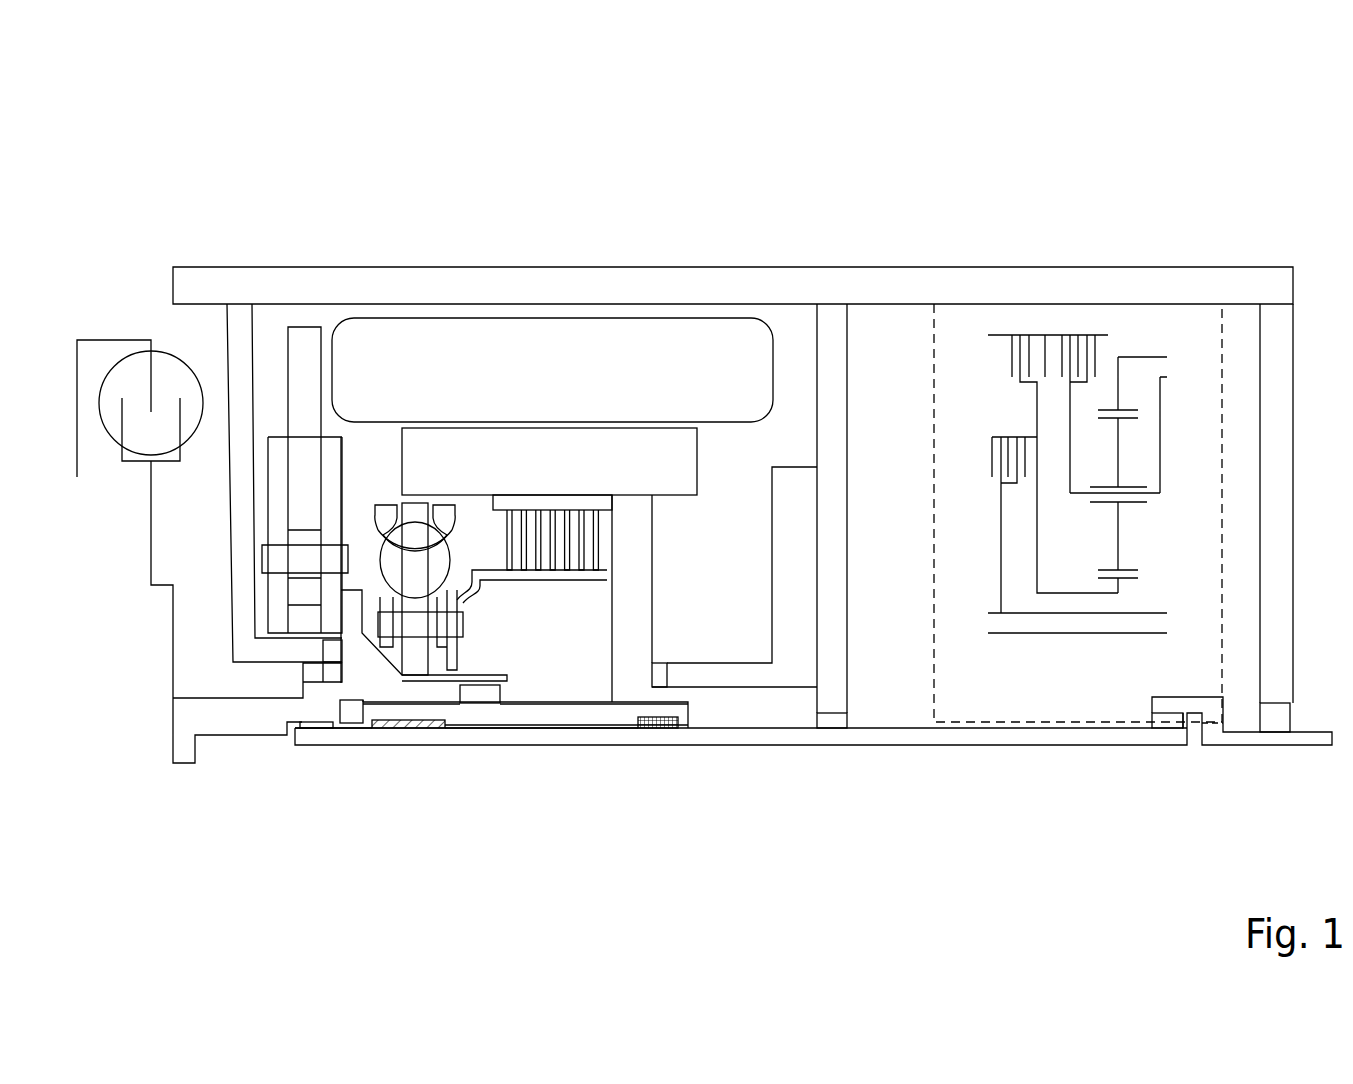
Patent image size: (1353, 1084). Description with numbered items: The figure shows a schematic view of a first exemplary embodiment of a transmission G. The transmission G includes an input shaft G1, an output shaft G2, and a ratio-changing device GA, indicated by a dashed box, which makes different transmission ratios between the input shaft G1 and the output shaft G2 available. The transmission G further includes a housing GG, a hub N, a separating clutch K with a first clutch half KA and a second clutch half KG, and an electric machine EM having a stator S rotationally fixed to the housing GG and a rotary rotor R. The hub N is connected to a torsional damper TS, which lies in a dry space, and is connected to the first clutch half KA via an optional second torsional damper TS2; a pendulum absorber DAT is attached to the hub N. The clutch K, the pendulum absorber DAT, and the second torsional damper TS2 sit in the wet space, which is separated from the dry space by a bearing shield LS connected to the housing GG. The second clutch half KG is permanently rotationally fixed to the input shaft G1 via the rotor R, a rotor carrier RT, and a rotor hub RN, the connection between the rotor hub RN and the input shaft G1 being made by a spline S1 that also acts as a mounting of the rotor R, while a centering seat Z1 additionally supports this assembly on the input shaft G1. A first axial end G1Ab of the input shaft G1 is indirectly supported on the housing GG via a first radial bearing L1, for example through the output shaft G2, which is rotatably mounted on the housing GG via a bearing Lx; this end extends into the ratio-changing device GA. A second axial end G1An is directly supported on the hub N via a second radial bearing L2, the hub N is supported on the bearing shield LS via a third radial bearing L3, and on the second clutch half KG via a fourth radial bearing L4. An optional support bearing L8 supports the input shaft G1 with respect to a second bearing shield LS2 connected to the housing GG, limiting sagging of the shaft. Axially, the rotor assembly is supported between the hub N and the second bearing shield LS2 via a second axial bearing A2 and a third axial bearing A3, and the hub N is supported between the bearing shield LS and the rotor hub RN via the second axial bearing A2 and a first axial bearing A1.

The electric machine EM is at (417, 120).
The housing GG is at (205, 285).
The bearing shield LS is at (240, 333).
The pendulum absorber DAT is at (303, 316).
The torsional damper TS is at (122, 509).
The second torsional damper TS2 is at (381, 486).
The stator S is at (433, 353).
The rotor R is at (502, 463).
The second clutch half KG is at (558, 500).
The separating clutch K is at (595, 471).
The rotor carrier RT is at (635, 525).
The first clutch half KA is at (592, 575).
The first axial bearing A1 is at (315, 653).
The second axial bearing A2 is at (356, 731).
The third axial bearing A3 is at (664, 658).
The second bearing shield LS2 is at (833, 538).
The first radial bearing L1 is at (1160, 733).
The second radial bearing L2 is at (320, 731).
The third radial bearing L3 is at (298, 673).
The fourth radial bearing L4 is at (590, 727).
The support bearing L8 is at (847, 717).
The bearing Lx is at (1279, 734).
The hub N is at (265, 715).
The second axial end G1An is at (432, 730).
The first axial end G1Ab is at (1158, 750).
The input shaft G1 is at (913, 733).
The output shaft G2 is at (1235, 737).
The spline S1 is at (485, 705).
The rotor hub RN is at (680, 734).
The centering seat Z1 is at (833, 730).
The transmission G is at (1162, 241).
The ratio-changing device GA is at (1224, 409).